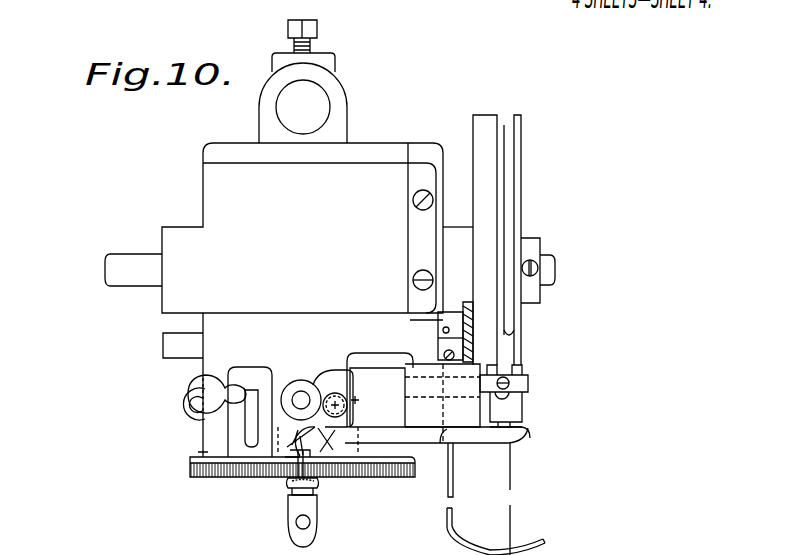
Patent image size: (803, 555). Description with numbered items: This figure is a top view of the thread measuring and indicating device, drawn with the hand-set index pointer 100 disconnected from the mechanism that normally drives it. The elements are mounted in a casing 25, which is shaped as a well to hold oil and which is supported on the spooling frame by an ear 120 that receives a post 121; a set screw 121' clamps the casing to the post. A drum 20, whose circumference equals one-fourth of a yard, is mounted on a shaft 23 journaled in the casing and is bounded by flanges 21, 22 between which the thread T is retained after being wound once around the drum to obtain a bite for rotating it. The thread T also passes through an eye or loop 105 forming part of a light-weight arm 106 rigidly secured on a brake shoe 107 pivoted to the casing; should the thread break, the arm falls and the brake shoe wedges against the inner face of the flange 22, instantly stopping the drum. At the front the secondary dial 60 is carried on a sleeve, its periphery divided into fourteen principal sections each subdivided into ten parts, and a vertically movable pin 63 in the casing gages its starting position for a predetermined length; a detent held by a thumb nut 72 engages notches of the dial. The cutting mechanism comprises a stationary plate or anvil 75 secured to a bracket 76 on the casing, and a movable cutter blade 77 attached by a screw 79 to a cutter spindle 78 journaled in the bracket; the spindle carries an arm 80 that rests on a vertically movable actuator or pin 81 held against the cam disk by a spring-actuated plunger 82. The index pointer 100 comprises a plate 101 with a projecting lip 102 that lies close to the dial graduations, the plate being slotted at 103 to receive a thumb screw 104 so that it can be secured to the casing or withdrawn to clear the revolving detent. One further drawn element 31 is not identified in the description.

The drum 20 is at (505, 175).
The flange 21 is at (522, 150).
The flange 22 is at (485, 143).
The shaft 23 is at (115, 273).
The casing 25 is at (317, 231).
The stub 31 is at (163, 352).
The secondary dial 60 is at (190, 474).
The pin 63 is at (282, 458).
The thumb nut 72 is at (330, 532).
The stationary plate or anvil 75 is at (497, 437).
The bracket 76 is at (403, 409).
The movable cutter blade 77 is at (516, 410).
The cutter spindle 78 is at (515, 386).
The screw 79 is at (520, 378).
The arm 80 is at (336, 446).
The actuator or pin 81 is at (332, 450).
The spring-actuated plunger 82 is at (377, 397).
The index pointer 100 is at (255, 372).
The plate 101 is at (226, 434).
The projecting lip 102 is at (287, 478).
The slot 103 is at (255, 403).
The thumb screw 104 is at (200, 392).
The eye or loop 105 is at (545, 520).
The light-weight arm 106 is at (453, 478).
The brake shoe 107 is at (470, 330).
The ear 120 is at (347, 100).
The post 121 is at (263, 107).
The set screw 121' is at (339, 34).
The thread T is at (505, 205).